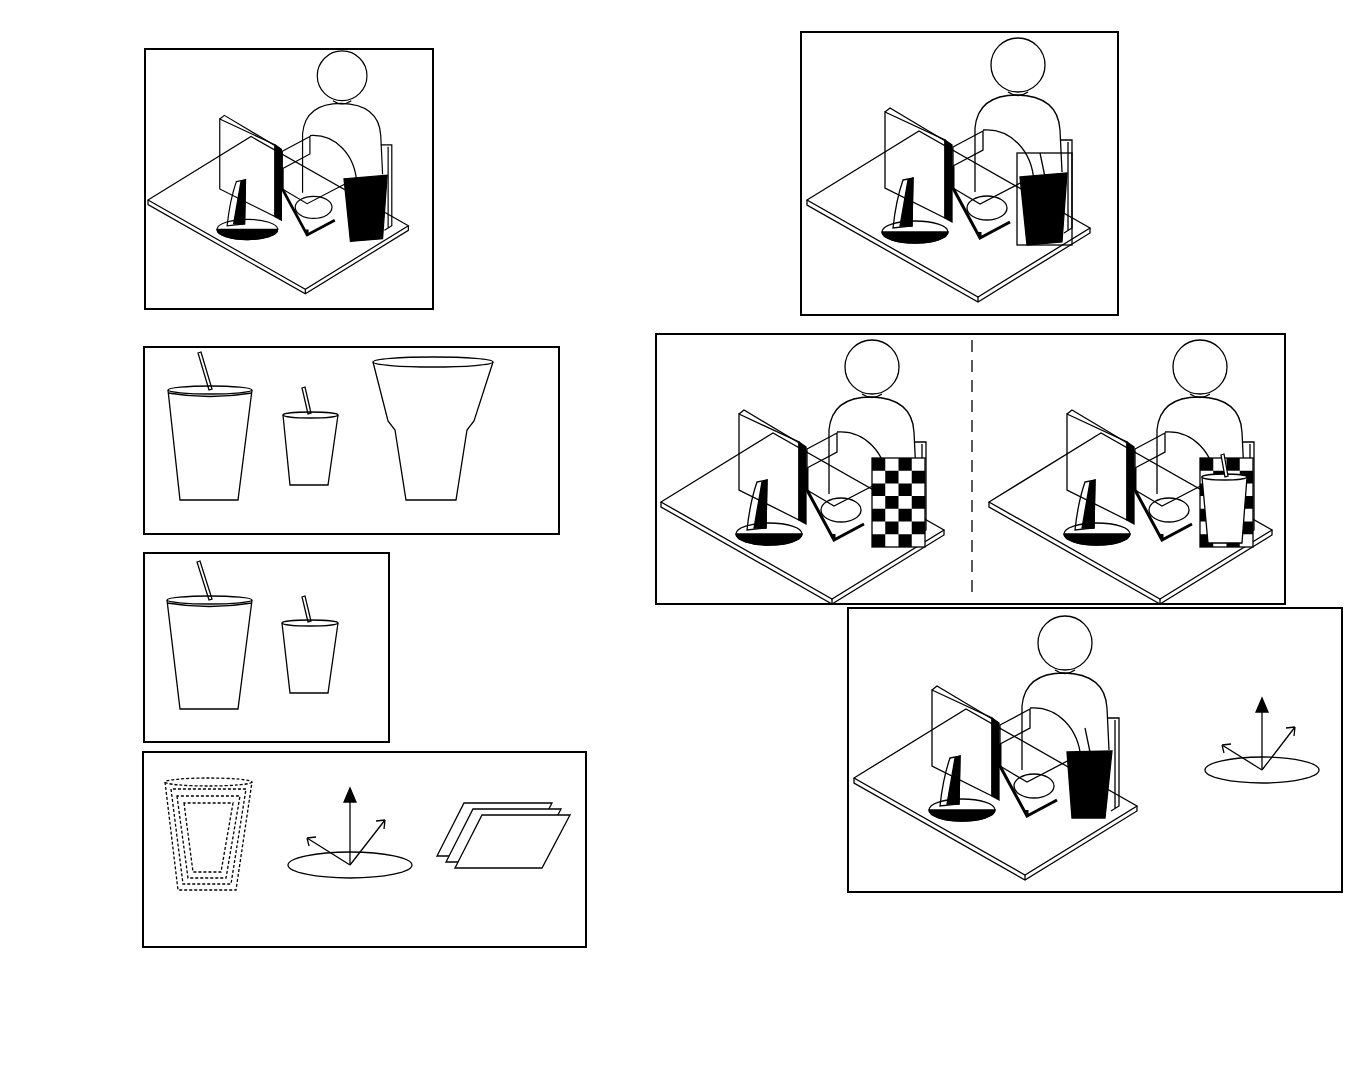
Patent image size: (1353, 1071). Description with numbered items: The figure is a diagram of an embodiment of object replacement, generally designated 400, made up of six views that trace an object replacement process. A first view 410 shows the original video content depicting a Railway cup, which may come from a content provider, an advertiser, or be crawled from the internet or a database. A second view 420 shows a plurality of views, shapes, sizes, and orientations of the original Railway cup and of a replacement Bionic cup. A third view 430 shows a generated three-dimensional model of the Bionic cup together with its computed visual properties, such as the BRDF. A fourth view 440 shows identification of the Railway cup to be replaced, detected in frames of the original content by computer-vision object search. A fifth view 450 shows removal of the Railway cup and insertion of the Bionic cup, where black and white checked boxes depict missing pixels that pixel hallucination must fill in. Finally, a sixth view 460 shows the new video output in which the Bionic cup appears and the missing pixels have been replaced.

The diagram illustrating a particular embodiment of object replacement 400 is at (1255, 68).
The first view 410 is at (434, 98).
The second view 420 is at (398, 567).
The third view 430 is at (563, 745).
The fourth view 440 is at (1118, 86).
The fifth view 450 is at (1167, 331).
The sixth view 460 is at (848, 748).